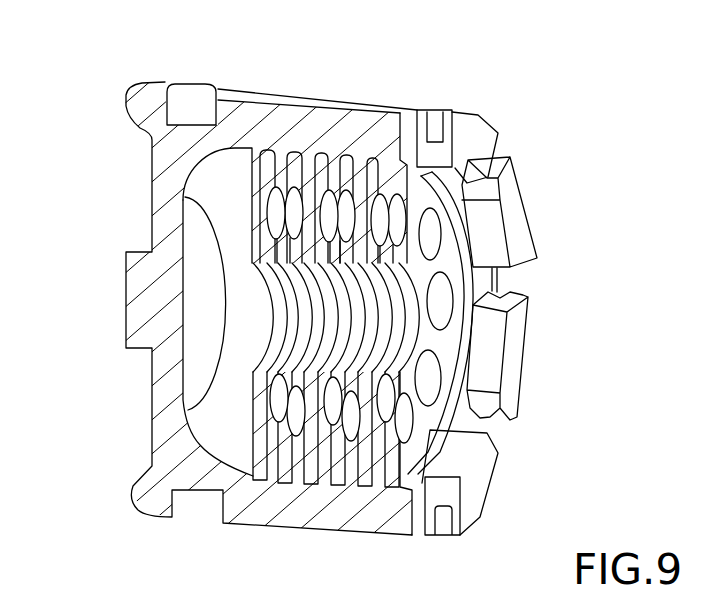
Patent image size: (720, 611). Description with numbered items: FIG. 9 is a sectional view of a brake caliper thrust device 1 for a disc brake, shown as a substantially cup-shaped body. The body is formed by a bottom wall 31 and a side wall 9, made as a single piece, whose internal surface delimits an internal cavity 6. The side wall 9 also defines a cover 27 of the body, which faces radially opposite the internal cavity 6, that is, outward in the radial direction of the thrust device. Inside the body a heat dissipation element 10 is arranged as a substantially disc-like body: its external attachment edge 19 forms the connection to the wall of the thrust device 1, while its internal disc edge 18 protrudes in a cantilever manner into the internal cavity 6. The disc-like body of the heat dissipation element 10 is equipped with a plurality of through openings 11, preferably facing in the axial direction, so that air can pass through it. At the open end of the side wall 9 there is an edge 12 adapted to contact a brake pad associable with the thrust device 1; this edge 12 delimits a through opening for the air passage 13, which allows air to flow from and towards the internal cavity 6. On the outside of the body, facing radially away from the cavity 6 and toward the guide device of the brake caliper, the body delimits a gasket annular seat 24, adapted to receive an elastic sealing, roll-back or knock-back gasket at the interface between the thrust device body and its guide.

The brake caliper thrust device 1 is at (149, 149).
The internal cavity 6 is at (205, 402).
The side wall 9 is at (350, 128).
The heat dissipation element 10 is at (265, 430).
The through opening 11 is at (283, 188).
The edge 12 is at (507, 208).
The through opening for the air passage 13 is at (503, 283).
The internal disc edge 18 is at (400, 357).
The external attachment edge 19 is at (397, 473).
The gasket annular seat 24 is at (203, 118).
The cover 27 is at (242, 97).
The bottom wall 31 is at (160, 213).